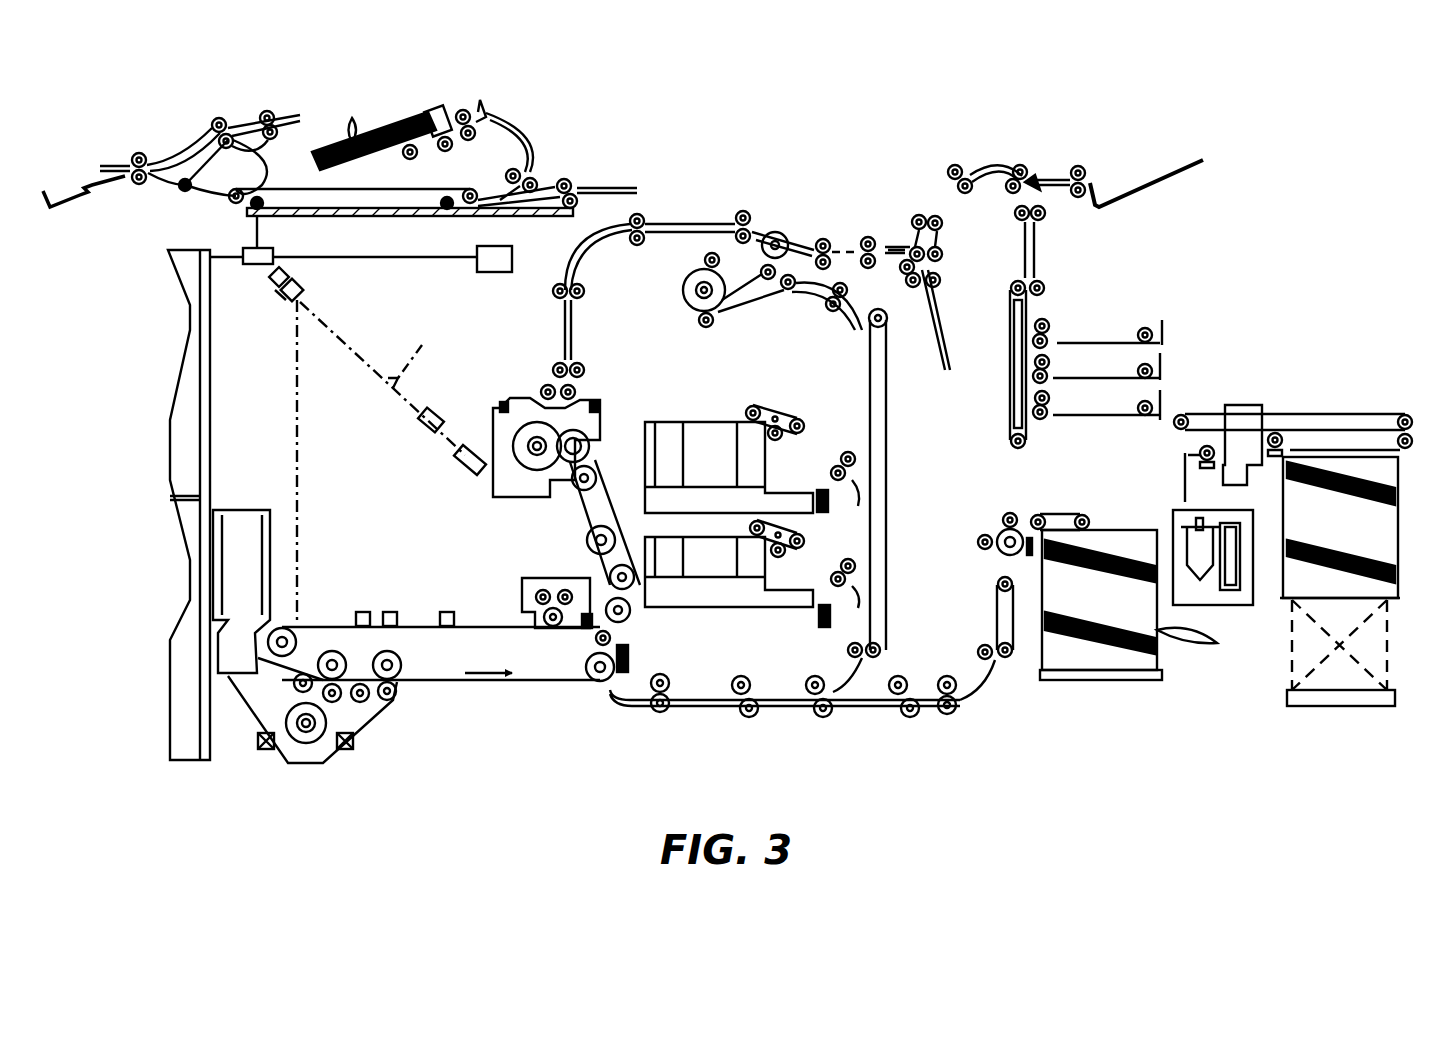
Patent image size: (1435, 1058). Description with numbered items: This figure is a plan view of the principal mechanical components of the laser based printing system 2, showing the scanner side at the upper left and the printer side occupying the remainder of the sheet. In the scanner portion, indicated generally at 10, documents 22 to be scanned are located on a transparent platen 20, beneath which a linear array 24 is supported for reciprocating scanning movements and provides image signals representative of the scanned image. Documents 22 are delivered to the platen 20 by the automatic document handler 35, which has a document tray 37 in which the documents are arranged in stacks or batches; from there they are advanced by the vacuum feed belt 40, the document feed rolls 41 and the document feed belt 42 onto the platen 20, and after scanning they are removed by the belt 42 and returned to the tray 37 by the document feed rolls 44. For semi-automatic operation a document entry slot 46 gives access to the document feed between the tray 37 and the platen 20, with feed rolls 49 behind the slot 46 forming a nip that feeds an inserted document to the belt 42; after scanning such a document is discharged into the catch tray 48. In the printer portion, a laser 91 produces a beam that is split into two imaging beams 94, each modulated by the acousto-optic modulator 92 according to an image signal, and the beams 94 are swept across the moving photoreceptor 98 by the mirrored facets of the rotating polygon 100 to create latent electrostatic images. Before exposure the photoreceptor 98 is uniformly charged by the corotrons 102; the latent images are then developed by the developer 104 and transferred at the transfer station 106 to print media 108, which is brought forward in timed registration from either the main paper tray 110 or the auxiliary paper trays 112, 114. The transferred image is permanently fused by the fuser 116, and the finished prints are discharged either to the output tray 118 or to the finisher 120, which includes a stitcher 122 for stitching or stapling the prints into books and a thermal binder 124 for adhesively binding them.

The printing system 2 is at (758, 135).
The inlet section 10 is at (165, 137).
The catch tray 48 is at (105, 198).
The document feed rolls 44 is at (270, 140).
The document 22 is at (346, 118).
The automatic document handler 35 is at (377, 118).
The document tray 37 is at (355, 145).
The document feed rolls 41 is at (472, 115).
The vacuum feed belt 40 is at (458, 140).
The document feed belt 42 is at (418, 190).
The feed rolls 49 is at (572, 179).
The document entry slot 46 is at (596, 178).
The transparent platen 20 is at (410, 218).
The linear array 24 is at (255, 246).
The rotating polygon 100 is at (284, 300).
The imaging beams 94 is at (382, 378).
The acousto-optic modulator 92 is at (438, 410).
The laser 91 is at (466, 478).
The corotrons 102 is at (448, 615).
The photoreceptor 98 is at (474, 626).
The developer 104 is at (378, 718).
The transfer station 106 is at (598, 700).
The fuser 116 is at (610, 432).
The auxiliary paper tray 114 is at (705, 418).
The auxiliary paper tray 112 is at (700, 606).
The output tray 118 is at (1180, 175).
The finisher 120 is at (1218, 344).
The stitcher 122 is at (1162, 354).
The thermal binder 124 is at (1318, 406).
The print media 108 is at (1210, 643).
The main paper tray 110 is at (1085, 682).